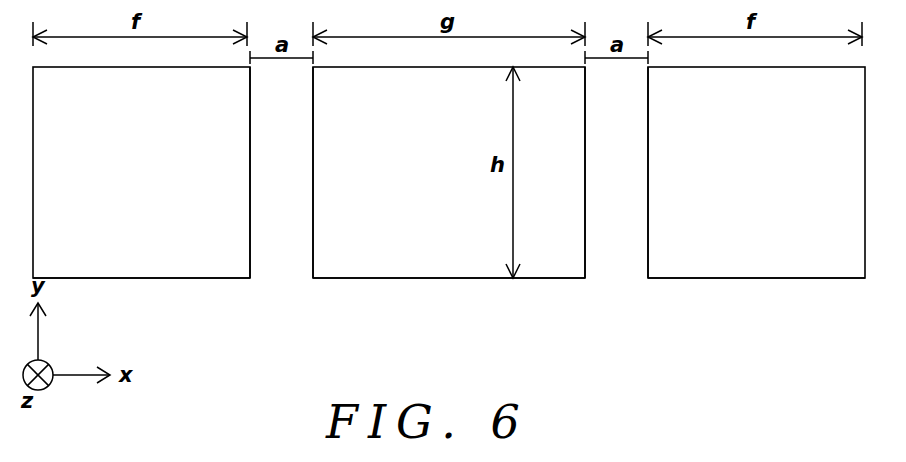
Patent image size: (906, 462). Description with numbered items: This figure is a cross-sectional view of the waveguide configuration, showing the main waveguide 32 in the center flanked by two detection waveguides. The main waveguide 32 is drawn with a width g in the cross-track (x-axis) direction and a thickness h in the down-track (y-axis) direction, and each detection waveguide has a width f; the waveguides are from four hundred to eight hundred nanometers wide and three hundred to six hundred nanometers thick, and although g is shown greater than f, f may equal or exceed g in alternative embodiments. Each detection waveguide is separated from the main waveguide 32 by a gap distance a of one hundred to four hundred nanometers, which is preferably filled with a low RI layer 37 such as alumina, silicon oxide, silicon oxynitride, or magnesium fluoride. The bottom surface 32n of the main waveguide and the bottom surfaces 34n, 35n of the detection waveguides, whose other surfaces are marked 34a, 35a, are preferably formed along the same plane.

The main waveguide 32 is at (472, 268).
The bottom surface of the main waveguide 32n is at (373, 280).
The surface of detection waveguide 34a is at (793, 268).
The bottom surface of detection waveguide 34n is at (693, 280).
The surface of detection waveguide 35a is at (100, 263).
The bottom surface of detection waveguide 35n is at (177, 280).
The low RI layer 37 is at (281, 250).